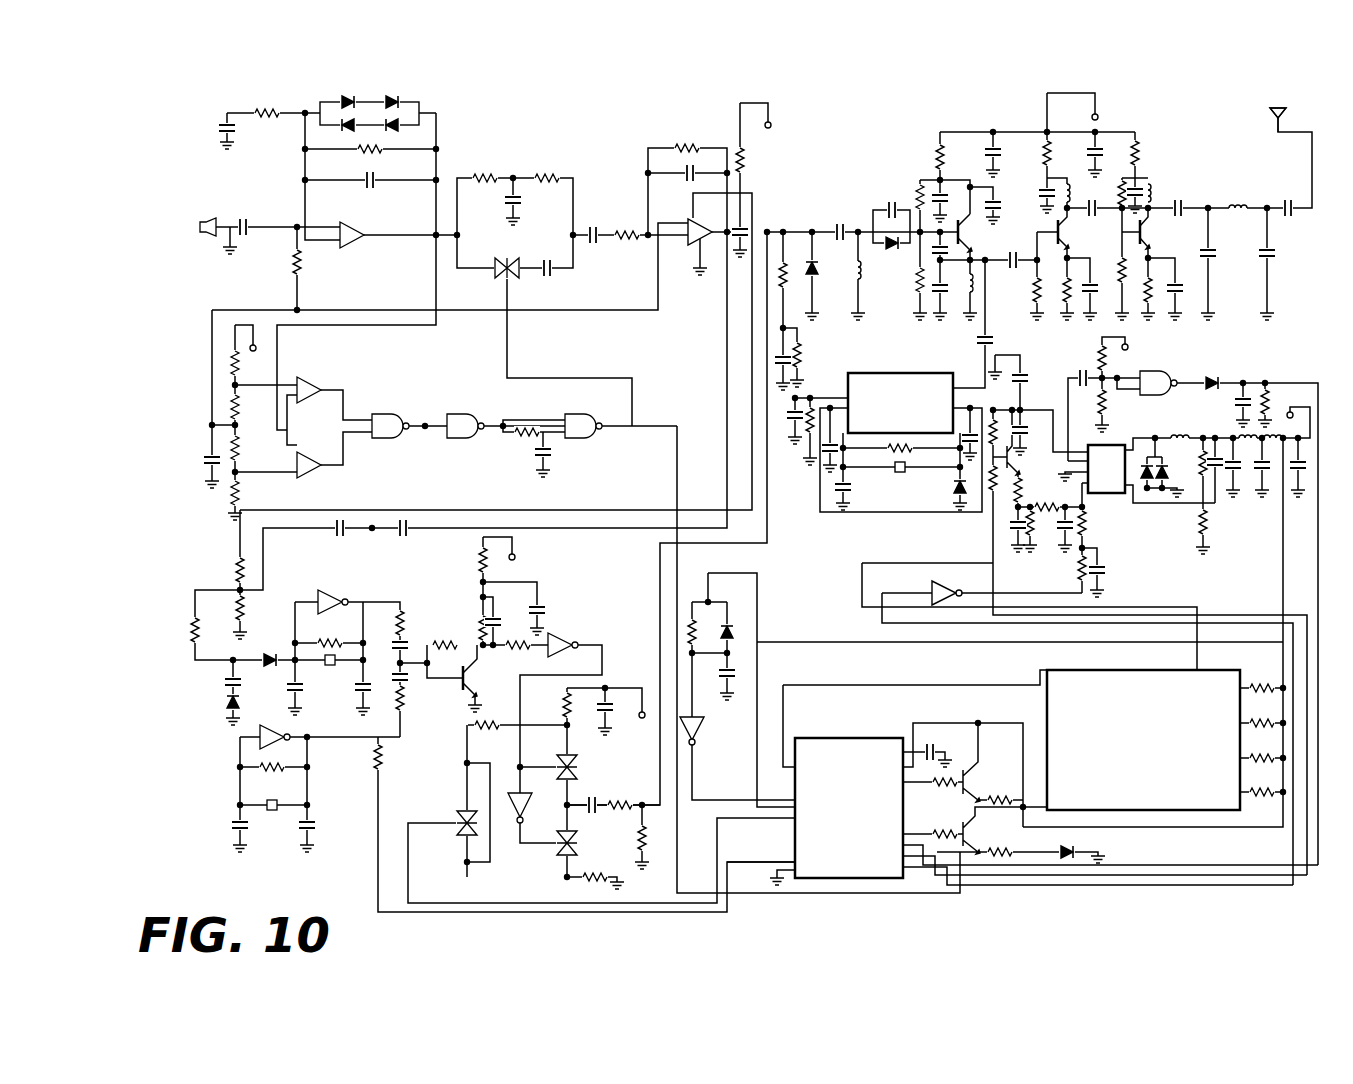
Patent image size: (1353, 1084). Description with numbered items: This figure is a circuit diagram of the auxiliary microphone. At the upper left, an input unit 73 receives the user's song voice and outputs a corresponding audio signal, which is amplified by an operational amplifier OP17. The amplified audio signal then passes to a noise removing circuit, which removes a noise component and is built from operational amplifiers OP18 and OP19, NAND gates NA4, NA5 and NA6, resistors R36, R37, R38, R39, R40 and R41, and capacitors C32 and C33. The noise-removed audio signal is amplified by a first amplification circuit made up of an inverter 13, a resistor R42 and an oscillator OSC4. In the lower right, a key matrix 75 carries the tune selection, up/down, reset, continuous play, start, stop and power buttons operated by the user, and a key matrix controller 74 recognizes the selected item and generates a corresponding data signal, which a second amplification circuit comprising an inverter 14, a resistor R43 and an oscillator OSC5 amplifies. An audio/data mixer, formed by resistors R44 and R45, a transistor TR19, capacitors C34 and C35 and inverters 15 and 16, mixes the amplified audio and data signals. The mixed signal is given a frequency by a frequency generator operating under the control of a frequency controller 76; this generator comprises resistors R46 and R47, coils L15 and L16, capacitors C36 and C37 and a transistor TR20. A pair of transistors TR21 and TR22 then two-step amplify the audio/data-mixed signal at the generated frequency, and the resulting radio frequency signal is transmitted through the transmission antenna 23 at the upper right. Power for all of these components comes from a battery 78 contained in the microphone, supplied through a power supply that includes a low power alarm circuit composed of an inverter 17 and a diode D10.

The inverter 13 is at (333, 593).
The inverter 14 is at (275, 727).
The inverter 15 is at (563, 637).
The inverter 16 is at (530, 808).
The inverter 17 is at (1158, 397).
The transmission antenna 23 is at (1292, 117).
The input unit 73 is at (190, 243).
The key matrix controller 74 is at (862, 738).
The key matrix 75 is at (1047, 670).
The frequency controller 76 is at (905, 373).
The battery 78 is at (1032, 372).
The operational amplifier OP17 is at (370, 226).
The operational amplifier OP18 is at (327, 385).
The operational amplifier OP19 is at (321, 454).
The resistor R36 is at (252, 363).
The resistor R37 is at (252, 407).
The resistor R38 is at (252, 448).
The resistor R39 is at (252, 493).
The resistor R40 is at (485, 166).
The resistor R41 is at (548, 166).
The resistor R42 is at (331, 632).
The resistor R43 is at (274, 777).
The resistor R44 is at (443, 635).
The resistor R45 is at (516, 657).
The resistor R46 is at (901, 194).
The resistor R47 is at (908, 284).
The capacitor C32 is at (530, 204).
The capacitor C33 is at (530, 279).
The capacitor C34 is at (508, 610).
The capacitor C35 is at (597, 816).
The capacitor C36 is at (842, 221).
The capacitor C37 is at (897, 238).
The NAND gate NA4 is at (390, 440).
The NAND gate NA5 is at (465, 440).
The NAND gate NA6 is at (583, 440).
The oscillator OSC4 is at (335, 674).
The oscillator OSC5 is at (278, 817).
The transistor TR19 is at (493, 683).
The transistor TR20 is at (989, 234).
The transistor TR21 is at (1087, 234).
The transistor TR22 is at (1169, 234).
The coil L15 is at (827, 270).
The coil L16 is at (975, 290).
The diode D10 is at (1213, 395).